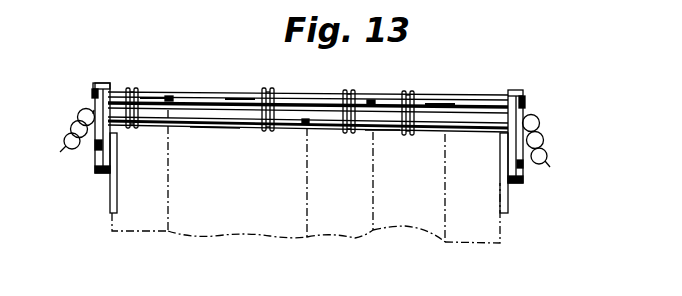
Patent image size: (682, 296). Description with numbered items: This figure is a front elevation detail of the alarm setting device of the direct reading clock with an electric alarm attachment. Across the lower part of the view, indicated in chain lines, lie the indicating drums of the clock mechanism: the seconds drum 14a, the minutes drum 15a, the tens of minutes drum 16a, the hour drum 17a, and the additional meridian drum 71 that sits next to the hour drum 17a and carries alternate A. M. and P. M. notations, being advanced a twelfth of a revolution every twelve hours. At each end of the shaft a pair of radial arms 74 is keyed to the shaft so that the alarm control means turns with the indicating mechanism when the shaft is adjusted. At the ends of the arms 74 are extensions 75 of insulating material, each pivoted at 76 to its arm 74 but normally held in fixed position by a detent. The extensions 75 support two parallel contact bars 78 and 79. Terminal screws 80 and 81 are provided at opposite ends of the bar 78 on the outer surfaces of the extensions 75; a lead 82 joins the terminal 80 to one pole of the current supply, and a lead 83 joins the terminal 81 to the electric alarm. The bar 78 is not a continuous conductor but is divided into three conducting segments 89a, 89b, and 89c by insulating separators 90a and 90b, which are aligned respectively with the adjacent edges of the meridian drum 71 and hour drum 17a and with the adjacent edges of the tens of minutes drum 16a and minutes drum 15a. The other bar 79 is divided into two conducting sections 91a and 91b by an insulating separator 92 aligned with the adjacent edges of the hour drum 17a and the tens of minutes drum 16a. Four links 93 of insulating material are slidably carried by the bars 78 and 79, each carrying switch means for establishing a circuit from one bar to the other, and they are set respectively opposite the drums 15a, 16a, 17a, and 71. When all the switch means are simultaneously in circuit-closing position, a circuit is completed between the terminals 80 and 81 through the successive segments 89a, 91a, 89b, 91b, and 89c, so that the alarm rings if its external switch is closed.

The seconds drum 14a is at (476, 222).
The minutes drum 15a is at (410, 221).
The tens of minutes drum 16a is at (342, 223).
The hour drum 17a is at (231, 222).
The meridian drum 71 is at (142, 220).
The radial arms 74 is at (112, 198).
The extensions 75 is at (98, 108).
The pivot 76 is at (96, 144).
The contact bar 78 is at (482, 96).
The contact bar 79 is at (477, 135).
The terminal screw 80 is at (523, 101).
The terminal screw 81 is at (94, 91).
The lead 82 is at (548, 136).
The lead 83 is at (70, 121).
The conducting segment 89a is at (152, 99).
The conducting segment 89b is at (233, 100).
The conducting segment 89c is at (435, 105).
The insulating separator 90a is at (172, 97).
The insulating separator 90b is at (373, 103).
The conducting section 91a is at (215, 128).
The conducting section 91b is at (388, 124).
The insulating separator 92 is at (306, 127).
The links 93 is at (130, 88).